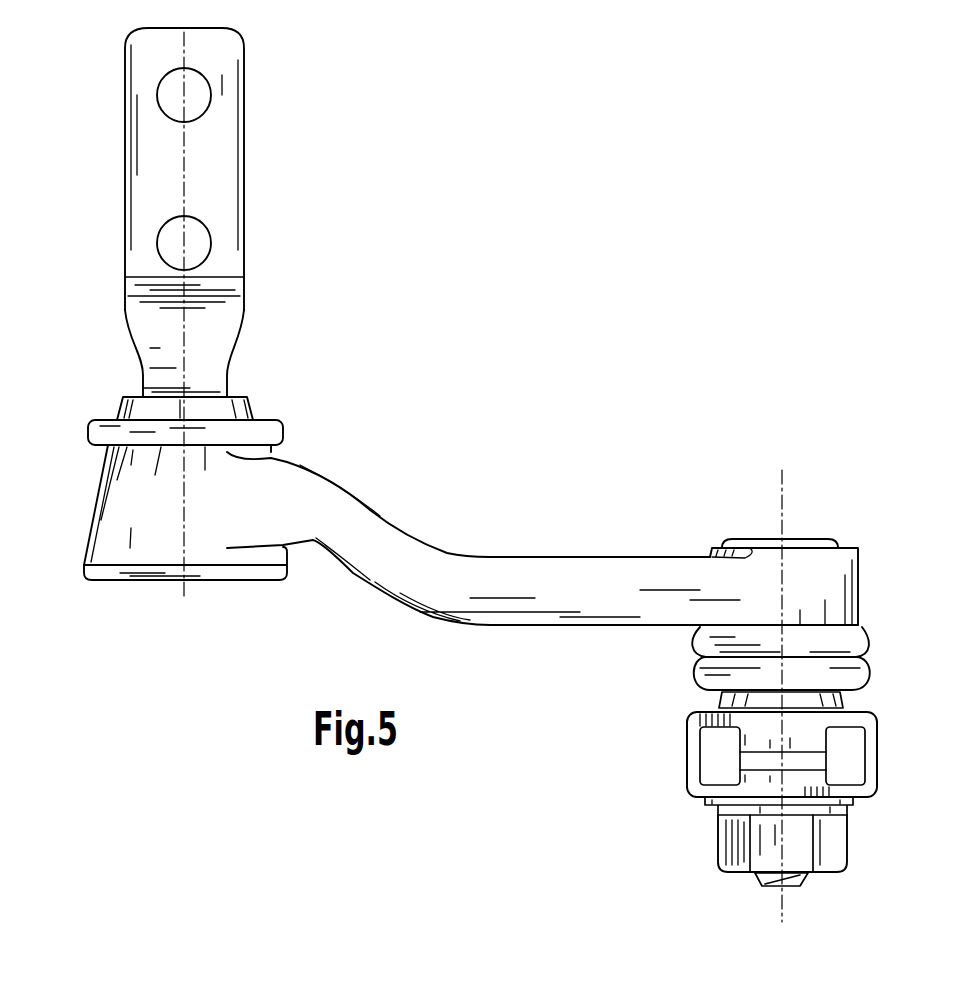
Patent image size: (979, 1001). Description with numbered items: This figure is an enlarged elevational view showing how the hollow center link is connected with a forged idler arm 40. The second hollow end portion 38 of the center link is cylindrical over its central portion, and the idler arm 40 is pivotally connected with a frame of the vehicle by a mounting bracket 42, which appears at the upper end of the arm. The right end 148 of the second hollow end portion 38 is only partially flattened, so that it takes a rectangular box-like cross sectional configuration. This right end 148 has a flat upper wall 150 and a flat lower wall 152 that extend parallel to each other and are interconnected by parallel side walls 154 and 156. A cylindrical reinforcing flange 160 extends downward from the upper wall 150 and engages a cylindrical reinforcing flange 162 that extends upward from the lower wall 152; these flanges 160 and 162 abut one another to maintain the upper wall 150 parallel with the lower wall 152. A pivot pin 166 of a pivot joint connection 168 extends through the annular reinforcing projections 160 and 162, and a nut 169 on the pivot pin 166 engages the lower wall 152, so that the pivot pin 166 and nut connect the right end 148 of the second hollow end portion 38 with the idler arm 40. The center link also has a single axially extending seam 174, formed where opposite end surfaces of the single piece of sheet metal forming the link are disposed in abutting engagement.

The second hollow end portion 38 is at (781, 776).
The idler arm 40 is at (535, 585).
The mounting bracket 42 is at (204, 147).
The right end 148 is at (781, 766).
The upper wall 150 is at (846, 704).
The lower wall 152 is at (705, 797).
The side wall 154 is at (815, 770).
The side wall 156 is at (690, 777).
The cylindrical reinforcing flange 160 is at (815, 740).
The cylindrical reinforcing flange 162 is at (873, 768).
The pivot pin 166 is at (788, 880).
The pivot joint connection 168 is at (853, 866).
The nut 169 is at (730, 845).
The seam 174 is at (690, 763).